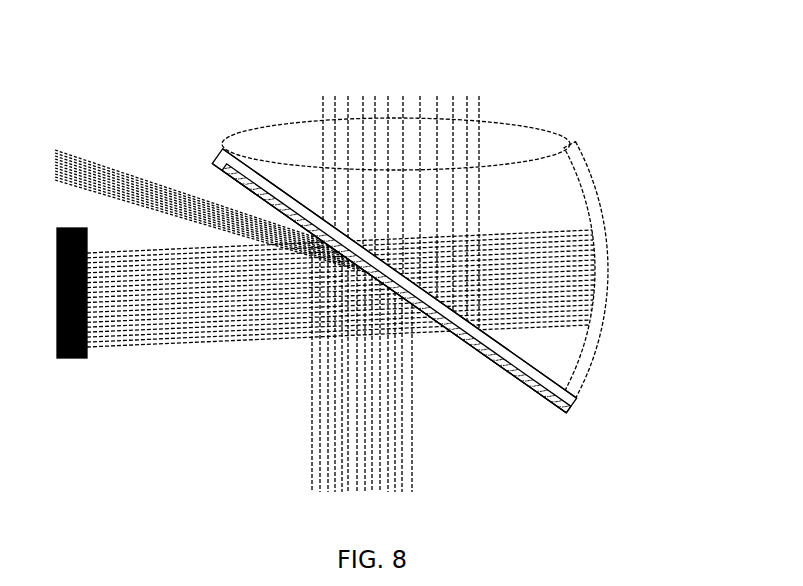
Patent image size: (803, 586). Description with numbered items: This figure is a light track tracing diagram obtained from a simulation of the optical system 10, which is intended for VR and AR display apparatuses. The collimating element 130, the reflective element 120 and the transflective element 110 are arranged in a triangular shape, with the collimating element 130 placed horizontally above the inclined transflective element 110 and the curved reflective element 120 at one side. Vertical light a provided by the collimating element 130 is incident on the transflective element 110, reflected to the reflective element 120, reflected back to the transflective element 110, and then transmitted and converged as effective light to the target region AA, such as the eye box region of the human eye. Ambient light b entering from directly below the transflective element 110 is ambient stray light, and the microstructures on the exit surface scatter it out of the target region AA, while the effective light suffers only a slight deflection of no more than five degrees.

The optical system 10 is at (90, 70).
The transflective element 110 is at (431, 275).
The reflective element 120 is at (603, 215).
The collimating element 130 is at (545, 137).
The target region AA is at (62, 360).
The vertical light a is at (394, 212).
The ambient light b is at (350, 363).